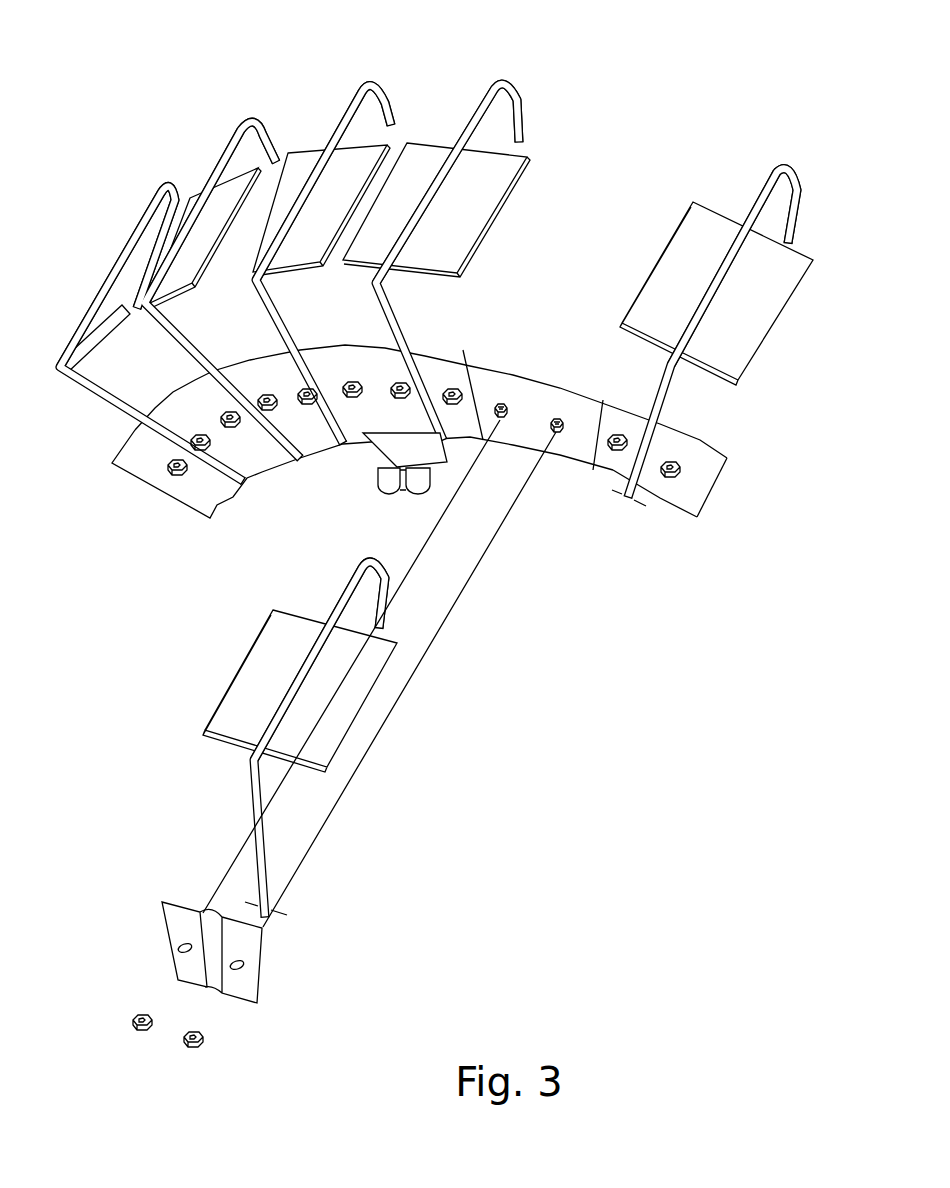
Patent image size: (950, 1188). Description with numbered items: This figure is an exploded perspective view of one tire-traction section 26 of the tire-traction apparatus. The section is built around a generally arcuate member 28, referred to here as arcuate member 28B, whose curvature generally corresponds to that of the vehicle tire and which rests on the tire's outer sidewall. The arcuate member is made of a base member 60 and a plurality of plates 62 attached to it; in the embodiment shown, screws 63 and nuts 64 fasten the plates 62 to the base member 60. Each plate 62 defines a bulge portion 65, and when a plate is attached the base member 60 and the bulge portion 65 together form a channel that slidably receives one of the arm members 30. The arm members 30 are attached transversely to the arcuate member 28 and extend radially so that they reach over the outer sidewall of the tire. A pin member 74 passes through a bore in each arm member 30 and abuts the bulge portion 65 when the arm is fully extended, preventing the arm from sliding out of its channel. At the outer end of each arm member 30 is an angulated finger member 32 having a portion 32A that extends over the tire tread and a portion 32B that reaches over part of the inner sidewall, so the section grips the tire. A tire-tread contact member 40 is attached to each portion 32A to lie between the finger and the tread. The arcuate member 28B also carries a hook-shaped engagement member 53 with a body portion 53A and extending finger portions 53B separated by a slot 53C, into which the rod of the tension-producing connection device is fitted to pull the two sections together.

The tire-traction section 26 is at (661, 136).
The arcuate member 28 is at (717, 490).
The arcuate member 28B is at (697, 510).
The arm member 30 is at (85, 393).
The finger member 32 is at (439, 476).
The portion of finger member 32A is at (132, 232).
The portion of finger member 32B is at (523, 122).
The tire-tread contact member 40 is at (310, 158).
The engagement member 53 is at (375, 497).
The body portion 53A is at (395, 466).
The finger portion 53B is at (383, 495).
The slot 53C is at (397, 492).
The base member 60 is at (572, 385).
The plate 62 is at (333, 357).
The screw 63 is at (553, 430).
The nut 64 is at (613, 433).
The bulge portion 65 is at (153, 428).
The pin member 74 is at (640, 511).